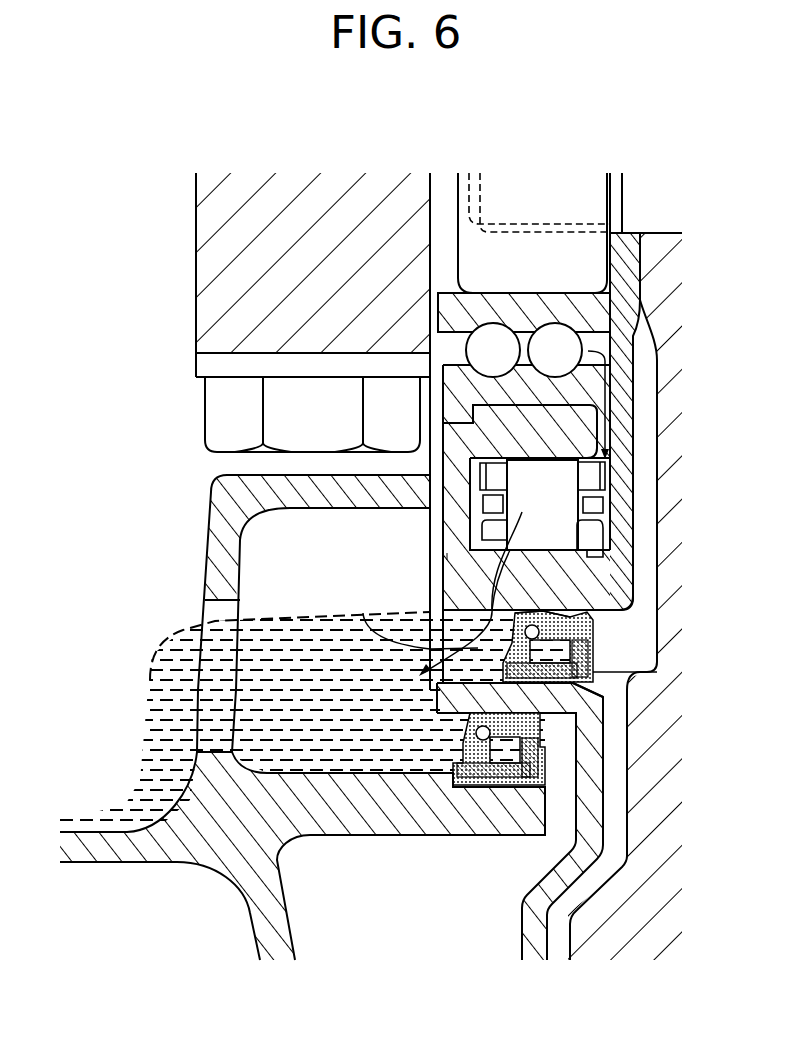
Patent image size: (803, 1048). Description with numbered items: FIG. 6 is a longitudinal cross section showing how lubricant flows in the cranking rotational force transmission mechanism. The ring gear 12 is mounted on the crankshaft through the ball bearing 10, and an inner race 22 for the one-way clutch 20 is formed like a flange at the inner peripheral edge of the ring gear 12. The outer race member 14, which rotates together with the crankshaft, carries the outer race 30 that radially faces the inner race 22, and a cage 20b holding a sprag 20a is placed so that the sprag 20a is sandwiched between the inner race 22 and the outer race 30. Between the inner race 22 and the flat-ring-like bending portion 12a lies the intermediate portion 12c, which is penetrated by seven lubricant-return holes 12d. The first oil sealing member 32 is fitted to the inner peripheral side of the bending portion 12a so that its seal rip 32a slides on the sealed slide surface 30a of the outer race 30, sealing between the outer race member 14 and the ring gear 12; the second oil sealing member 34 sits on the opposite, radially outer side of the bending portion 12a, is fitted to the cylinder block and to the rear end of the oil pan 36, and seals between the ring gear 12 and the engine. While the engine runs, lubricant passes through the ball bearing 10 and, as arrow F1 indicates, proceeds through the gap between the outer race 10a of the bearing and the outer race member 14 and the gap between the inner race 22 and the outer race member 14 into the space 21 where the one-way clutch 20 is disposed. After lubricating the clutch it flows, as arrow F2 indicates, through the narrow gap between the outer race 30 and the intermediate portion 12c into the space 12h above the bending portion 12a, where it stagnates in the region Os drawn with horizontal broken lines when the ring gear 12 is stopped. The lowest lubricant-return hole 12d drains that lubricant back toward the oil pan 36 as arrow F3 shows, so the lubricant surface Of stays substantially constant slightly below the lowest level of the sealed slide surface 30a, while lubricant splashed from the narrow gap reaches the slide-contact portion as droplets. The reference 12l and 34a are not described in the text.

The ball bearing 10 is at (580, 298).
The outer race of the ball bearing 10a is at (650, 355).
The outer race member 14 is at (625, 373).
The arrow F1 is at (643, 410).
The one-way clutch 20 is at (580, 474).
The sprag 20a is at (600, 490).
The space 21 is at (603, 508).
The cage 20b is at (603, 537).
The outer race 30 is at (603, 575).
The sealed slide surface 30a is at (627, 612).
The first oil sealing member 32 is at (593, 656).
The seal rip 32a is at (588, 629).
The stagnation region Os is at (657, 671).
The bending portion 12a is at (597, 695).
The second oil sealing member 34 is at (543, 742).
The seal seat 34a is at (467, 788).
The oil pan 36 is at (108, 863).
The inner race 22 is at (473, 420).
The ring gear 12 is at (443, 457).
The intermediate portion 12c is at (437, 525).
The arrow F2 is at (447, 553).
The lubricant-return hole 12d is at (430, 655).
The oil reservoir 12l is at (430, 613).
The arrow F3 is at (412, 620).
The lubricant surface Of is at (477, 583).
The space 12h is at (510, 612).